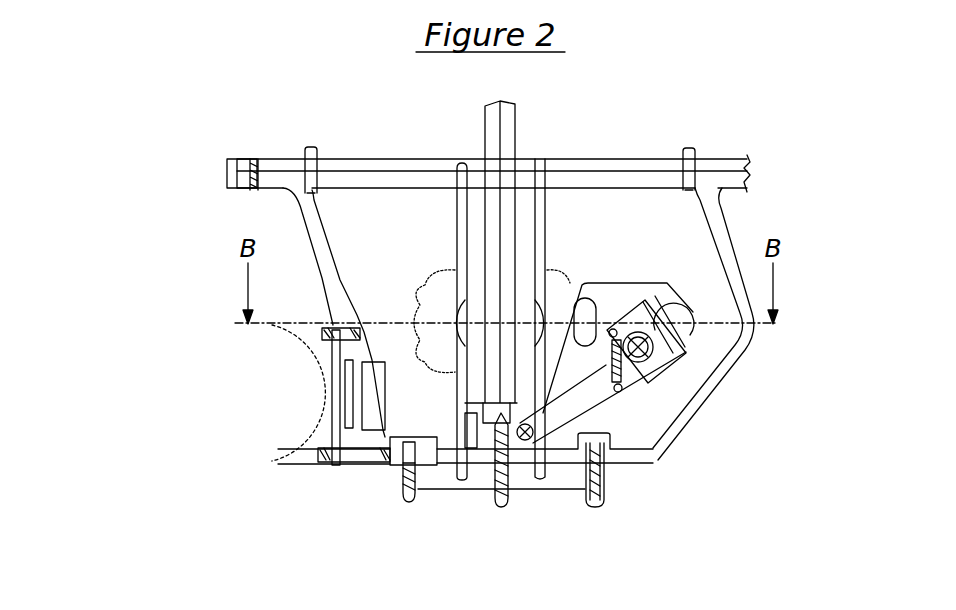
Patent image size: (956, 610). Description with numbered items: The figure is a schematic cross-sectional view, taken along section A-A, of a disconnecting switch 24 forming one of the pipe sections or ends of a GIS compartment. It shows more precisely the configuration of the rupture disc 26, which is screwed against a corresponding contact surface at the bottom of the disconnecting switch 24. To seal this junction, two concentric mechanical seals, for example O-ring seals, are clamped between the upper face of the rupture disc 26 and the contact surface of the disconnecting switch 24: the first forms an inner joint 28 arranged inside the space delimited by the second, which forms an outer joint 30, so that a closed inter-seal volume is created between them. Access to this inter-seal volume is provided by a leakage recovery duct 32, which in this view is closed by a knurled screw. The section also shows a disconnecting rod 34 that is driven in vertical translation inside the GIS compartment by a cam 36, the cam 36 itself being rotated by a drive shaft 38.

The disconnecting switch 24 is at (152, 255).
The rupture disc 26 is at (605, 477).
The inner joint 28 is at (570, 465).
The outer joint 30 is at (418, 467).
The leakage recovery duct 32 is at (427, 465).
The disconnecting rod 34 is at (508, 143).
The cam 36 is at (608, 302).
The drive shaft 38 is at (680, 323).